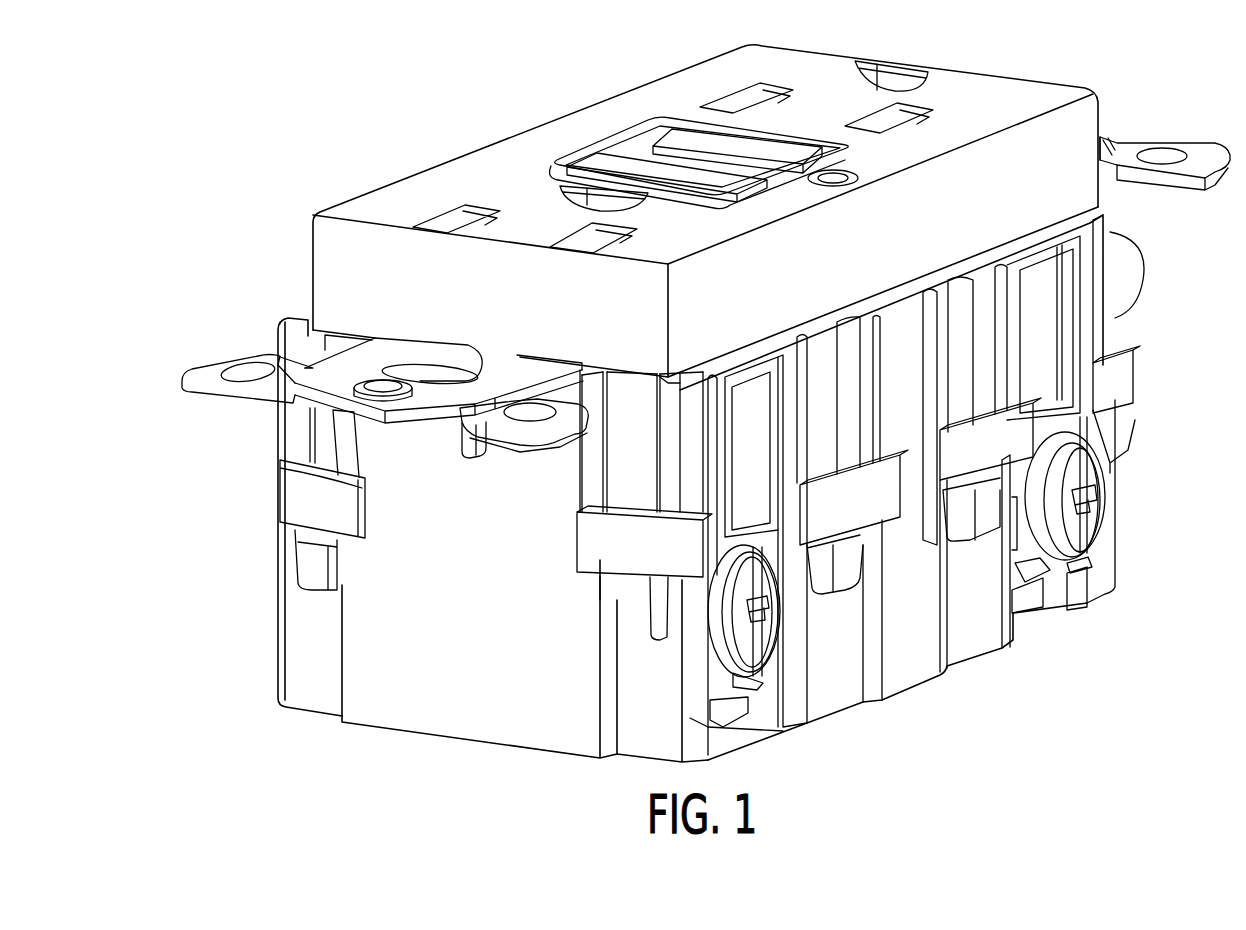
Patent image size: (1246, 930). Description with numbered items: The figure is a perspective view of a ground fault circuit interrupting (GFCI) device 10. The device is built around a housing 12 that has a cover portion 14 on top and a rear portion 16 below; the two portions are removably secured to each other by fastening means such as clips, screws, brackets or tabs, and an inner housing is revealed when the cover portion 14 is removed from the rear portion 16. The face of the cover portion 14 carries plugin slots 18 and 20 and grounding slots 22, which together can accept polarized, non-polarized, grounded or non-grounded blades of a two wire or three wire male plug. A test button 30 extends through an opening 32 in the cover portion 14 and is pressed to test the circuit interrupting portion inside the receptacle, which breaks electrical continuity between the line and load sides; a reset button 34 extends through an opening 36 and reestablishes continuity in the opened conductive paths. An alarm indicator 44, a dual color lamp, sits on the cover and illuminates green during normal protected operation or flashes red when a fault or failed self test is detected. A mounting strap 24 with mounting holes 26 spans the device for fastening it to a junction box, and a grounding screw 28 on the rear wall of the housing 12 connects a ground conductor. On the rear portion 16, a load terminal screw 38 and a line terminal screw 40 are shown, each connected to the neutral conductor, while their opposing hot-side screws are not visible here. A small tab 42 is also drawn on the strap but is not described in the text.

The GFCI device 10 is at (366, 99).
The housing 12 is at (1110, 319).
The cover portion 14 is at (990, 86).
The rear portion 16 is at (455, 743).
The plugin slot 18 is at (445, 211).
The plugin slot 20 is at (620, 229).
The grounding slot 22 is at (570, 190).
The mounting strap 24 is at (213, 398).
The mounting hole 26 is at (248, 370).
The grounding screw 28 is at (1138, 268).
The test button 30 is at (697, 133).
The opening 32 is at (653, 147).
The reset button 34 is at (607, 155).
The opening 36 is at (563, 157).
The load terminal screw 38 is at (745, 690).
The line terminal screw 40 is at (1095, 515).
The tab 42 is at (470, 461).
The alarm indicator 44 is at (835, 183).